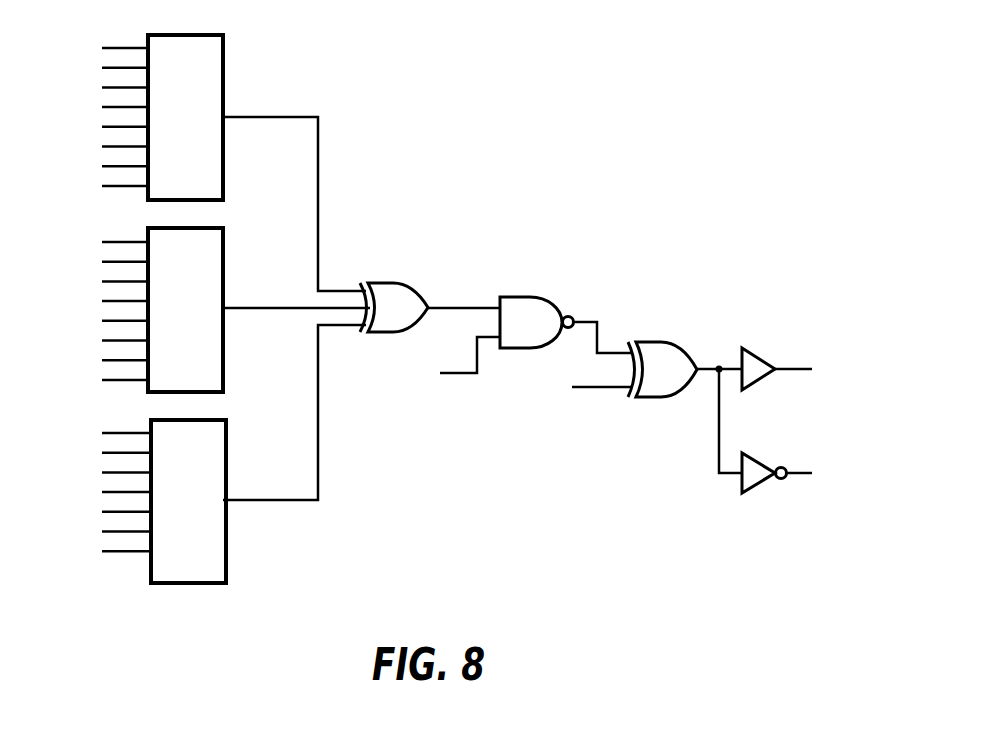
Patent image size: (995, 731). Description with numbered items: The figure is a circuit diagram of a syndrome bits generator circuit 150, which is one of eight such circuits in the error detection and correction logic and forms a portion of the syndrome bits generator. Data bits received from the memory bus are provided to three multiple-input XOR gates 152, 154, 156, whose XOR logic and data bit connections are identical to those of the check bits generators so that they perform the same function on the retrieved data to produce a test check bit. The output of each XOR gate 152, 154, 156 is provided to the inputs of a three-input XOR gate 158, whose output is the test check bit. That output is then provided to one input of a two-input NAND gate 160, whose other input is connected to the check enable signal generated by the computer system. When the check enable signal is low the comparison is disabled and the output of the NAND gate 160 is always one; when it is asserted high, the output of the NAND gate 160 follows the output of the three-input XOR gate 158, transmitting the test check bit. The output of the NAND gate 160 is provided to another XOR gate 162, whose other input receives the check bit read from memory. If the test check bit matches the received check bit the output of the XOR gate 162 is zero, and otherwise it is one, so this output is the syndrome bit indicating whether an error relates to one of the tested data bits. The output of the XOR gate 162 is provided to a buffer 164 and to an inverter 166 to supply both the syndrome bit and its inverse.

The syndrome bits generator circuit 150 is at (463, 295).
The multiple input XOR gate 152 is at (223, 53).
The multiple input XOR gate 154 is at (223, 245).
The multiple input XOR gate 156 is at (226, 438).
The three-input XOR gate 158 is at (392, 283).
The two-input NAND gate 160 is at (530, 297).
The XOR gate 162 is at (666, 342).
The buffer 164 is at (757, 352).
The inverter 166 is at (757, 456).